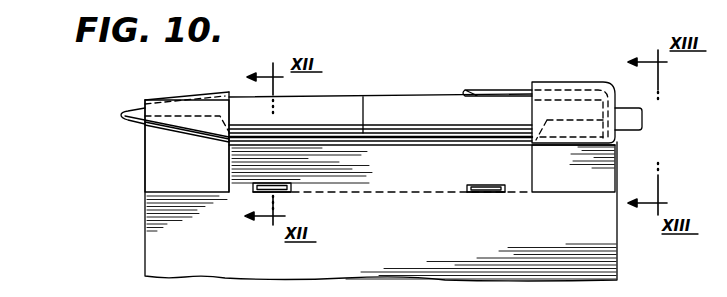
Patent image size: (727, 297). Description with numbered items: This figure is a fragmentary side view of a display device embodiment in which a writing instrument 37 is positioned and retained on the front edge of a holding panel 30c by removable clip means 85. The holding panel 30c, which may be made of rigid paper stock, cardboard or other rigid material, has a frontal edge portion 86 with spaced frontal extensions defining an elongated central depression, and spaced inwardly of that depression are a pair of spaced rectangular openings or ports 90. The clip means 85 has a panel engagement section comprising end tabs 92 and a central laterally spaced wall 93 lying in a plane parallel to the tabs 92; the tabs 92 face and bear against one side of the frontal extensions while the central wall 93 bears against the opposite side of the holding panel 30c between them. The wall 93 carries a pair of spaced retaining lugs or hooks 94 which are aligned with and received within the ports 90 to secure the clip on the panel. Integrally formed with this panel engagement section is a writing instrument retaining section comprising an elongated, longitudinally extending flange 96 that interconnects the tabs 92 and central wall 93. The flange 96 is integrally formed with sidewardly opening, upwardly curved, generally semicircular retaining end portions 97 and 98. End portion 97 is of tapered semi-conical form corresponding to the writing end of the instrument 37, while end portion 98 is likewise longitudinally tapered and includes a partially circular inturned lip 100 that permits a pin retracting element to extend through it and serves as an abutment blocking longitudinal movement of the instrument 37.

The holding panel 30c is at (143, 228).
The writing instrument 37 is at (392, 102).
The clip means 85 is at (551, 82).
The frontal edge portion 86 is at (381, 213).
The rectangular openings or ports 90 is at (318, 192).
The end tabs 92 is at (162, 160).
The central wall 93 is at (405, 193).
The retaining lugs or hooks 94 is at (253, 192).
The flange 96 is at (452, 145).
The retaining end portion 97 is at (174, 99).
The retaining end portion 98 is at (586, 83).
The inturned lip 100 is at (620, 102).